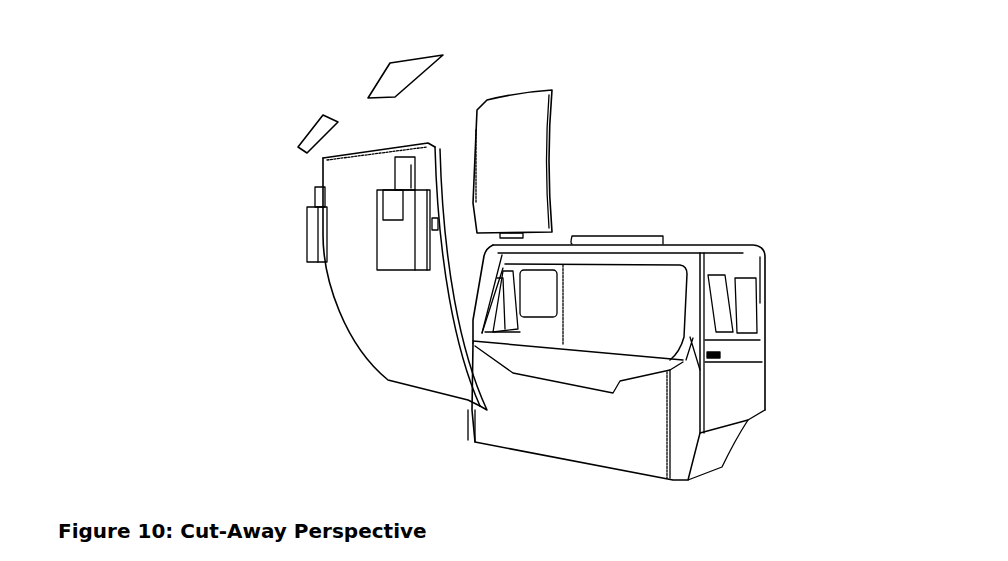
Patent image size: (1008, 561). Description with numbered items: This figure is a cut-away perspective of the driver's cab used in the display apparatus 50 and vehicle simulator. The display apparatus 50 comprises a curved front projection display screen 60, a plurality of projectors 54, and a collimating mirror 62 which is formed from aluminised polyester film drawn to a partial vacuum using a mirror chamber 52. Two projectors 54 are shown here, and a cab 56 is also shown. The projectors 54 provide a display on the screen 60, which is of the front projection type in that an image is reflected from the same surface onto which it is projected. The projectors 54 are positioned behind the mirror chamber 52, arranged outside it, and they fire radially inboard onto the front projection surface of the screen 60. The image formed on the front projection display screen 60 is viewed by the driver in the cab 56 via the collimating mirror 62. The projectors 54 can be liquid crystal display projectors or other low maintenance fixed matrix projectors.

The display apparatus 50 is at (507, 251).
The mirror chamber 52 is at (407, 245).
The projectors 54 is at (303, 227).
The cab 56 is at (540, 458).
The front projection display screen 60 is at (532, 132).
The collimating mirror 62 is at (440, 157).